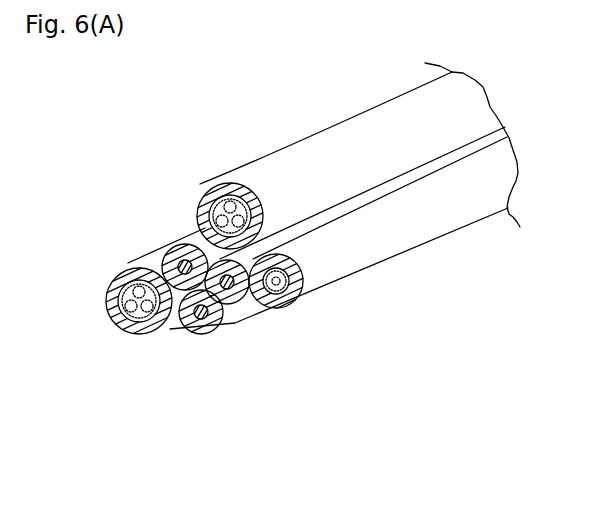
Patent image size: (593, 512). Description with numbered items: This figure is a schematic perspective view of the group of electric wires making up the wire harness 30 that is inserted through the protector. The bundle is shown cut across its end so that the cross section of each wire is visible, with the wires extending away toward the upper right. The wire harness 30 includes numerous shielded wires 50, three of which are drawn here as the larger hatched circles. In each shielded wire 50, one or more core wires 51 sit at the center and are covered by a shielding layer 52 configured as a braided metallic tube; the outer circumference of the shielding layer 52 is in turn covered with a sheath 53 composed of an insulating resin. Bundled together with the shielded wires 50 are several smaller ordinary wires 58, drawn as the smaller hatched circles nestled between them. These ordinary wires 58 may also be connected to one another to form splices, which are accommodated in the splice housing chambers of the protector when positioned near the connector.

The wire harness 30 is at (203, 346).
The shielded wire 50 is at (110, 315).
The core wire 51 is at (230, 213).
The shielding layer 52 is at (227, 185).
The sheath 53 is at (260, 218).
The ordinary wire 58 is at (240, 298).